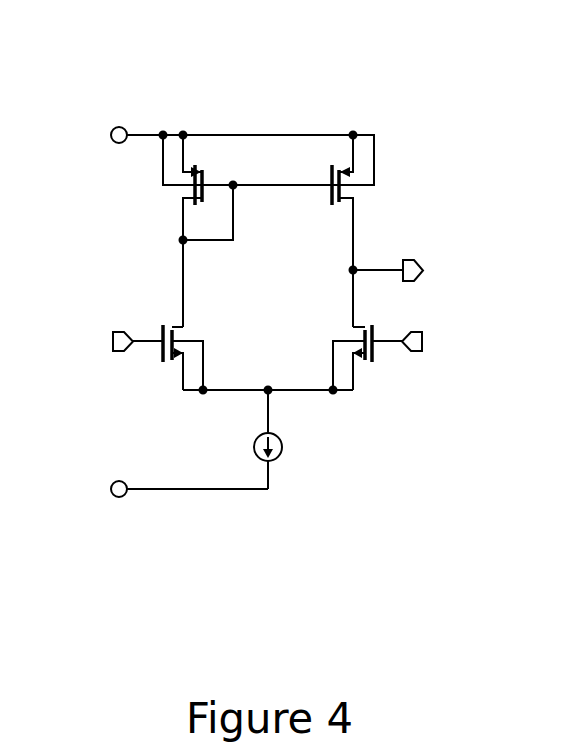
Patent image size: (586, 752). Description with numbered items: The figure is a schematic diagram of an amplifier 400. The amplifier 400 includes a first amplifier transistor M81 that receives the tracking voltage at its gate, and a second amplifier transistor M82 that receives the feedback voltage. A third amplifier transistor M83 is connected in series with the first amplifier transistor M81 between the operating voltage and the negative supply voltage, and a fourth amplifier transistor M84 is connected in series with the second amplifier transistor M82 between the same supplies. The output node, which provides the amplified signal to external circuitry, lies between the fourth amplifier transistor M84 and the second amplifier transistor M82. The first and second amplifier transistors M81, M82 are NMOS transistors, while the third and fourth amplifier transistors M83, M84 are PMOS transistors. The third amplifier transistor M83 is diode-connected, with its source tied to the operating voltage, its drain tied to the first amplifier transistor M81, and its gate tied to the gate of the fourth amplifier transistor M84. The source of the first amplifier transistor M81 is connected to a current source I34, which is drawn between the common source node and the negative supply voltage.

The amplifier 400 is at (498, 79).
The first amplifier transistor M81 is at (187, 346).
The second amplifier transistor M82 is at (347, 346).
The third amplifier transistor M83 is at (216, 231).
The fourth amplifier transistor M84 is at (318, 231).
The current source I34 is at (292, 439).